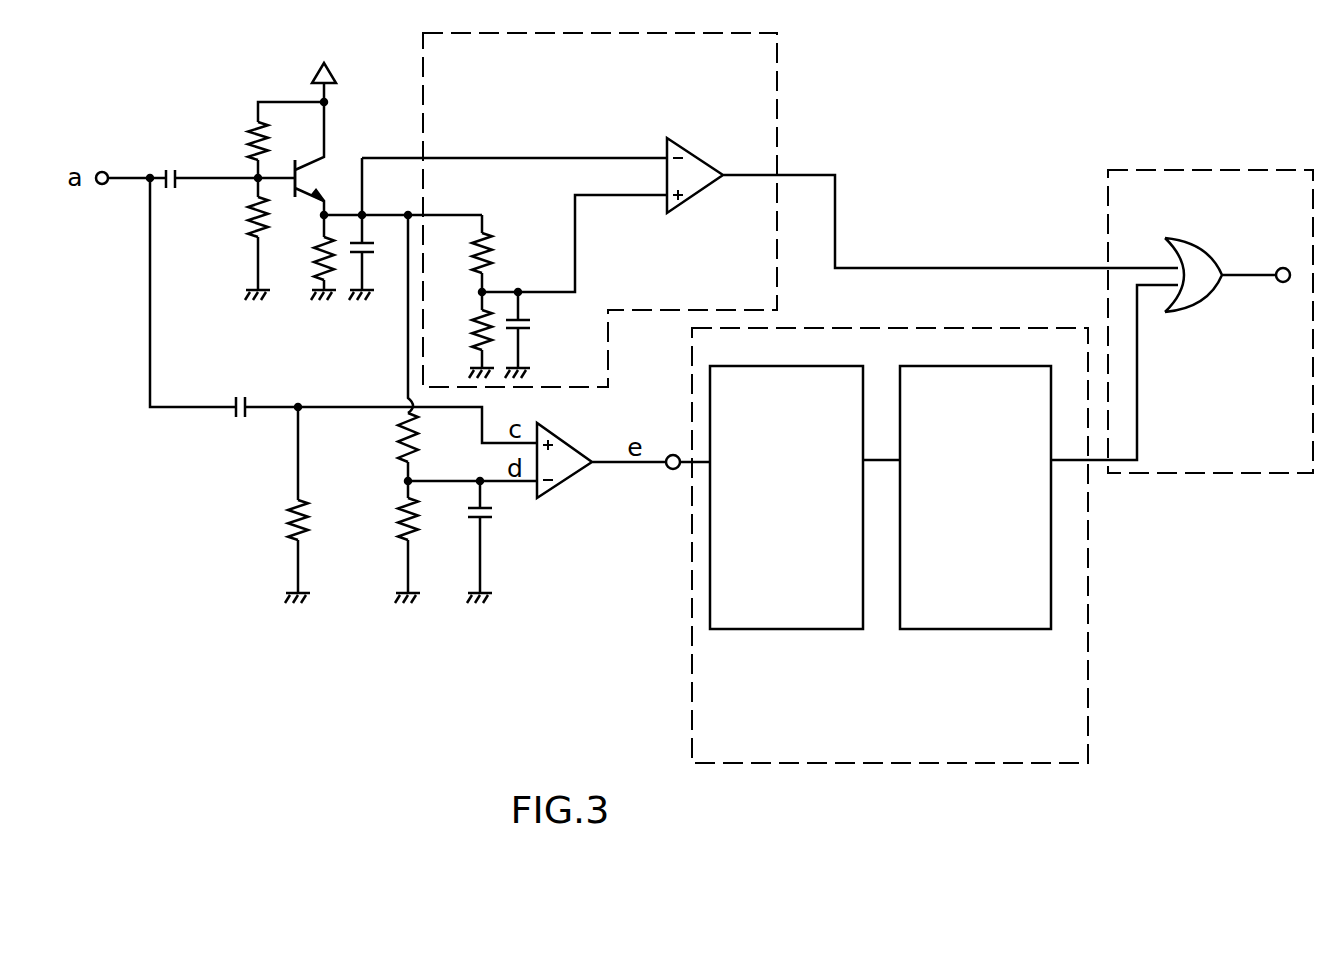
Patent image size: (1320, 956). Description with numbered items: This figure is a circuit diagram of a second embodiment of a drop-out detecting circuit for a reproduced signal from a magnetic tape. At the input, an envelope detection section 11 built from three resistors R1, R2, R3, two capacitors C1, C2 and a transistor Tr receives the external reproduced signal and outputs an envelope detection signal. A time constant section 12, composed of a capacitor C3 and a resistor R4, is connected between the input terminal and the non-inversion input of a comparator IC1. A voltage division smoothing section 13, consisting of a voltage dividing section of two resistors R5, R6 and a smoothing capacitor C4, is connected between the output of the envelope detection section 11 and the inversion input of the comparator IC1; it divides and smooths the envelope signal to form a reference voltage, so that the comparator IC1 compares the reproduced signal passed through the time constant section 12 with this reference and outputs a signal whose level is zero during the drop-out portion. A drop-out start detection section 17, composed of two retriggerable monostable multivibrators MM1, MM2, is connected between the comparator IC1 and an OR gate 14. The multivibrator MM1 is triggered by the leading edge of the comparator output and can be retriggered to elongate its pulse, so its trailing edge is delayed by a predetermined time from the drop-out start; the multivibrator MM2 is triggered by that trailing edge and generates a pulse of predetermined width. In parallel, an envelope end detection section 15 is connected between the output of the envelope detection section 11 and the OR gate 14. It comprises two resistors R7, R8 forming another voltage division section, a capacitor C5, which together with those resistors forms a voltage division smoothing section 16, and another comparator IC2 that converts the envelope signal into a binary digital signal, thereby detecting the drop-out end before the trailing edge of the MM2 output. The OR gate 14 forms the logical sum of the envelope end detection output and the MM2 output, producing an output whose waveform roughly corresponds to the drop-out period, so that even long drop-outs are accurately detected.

The envelope detection section 11 is at (438, 238).
The time constant section 12 is at (243, 500).
The voltage division smoothing section 13 is at (431, 535).
The OR gate 14 is at (1182, 170).
The envelope end detection section 15 is at (800, 193).
The voltage division smoothing section 16 is at (550, 272).
The drop-out start detection section 17 is at (935, 550).
The capacitor C1 is at (168, 167).
The capacitor C2 is at (372, 247).
The capacitor C3 is at (232, 420).
The capacitor C4 is at (492, 530).
The capacitor C5 is at (528, 327).
The resistor R1 is at (250, 140).
The resistor R2 is at (249, 205).
The resistor R3 is at (316, 241).
The resistor R4 is at (290, 510).
The resistor R5 is at (396, 459).
The resistor R6 is at (396, 525).
The resistor R7 is at (498, 268).
The resistor R8 is at (477, 330).
The transistor Tr is at (316, 190).
The comparator IC1 is at (580, 452).
The comparator IC2 is at (682, 204).
The retriggerable monostable multivibrator MM1 is at (843, 633).
The retriggerable monostable multivibrator MM2 is at (996, 633).